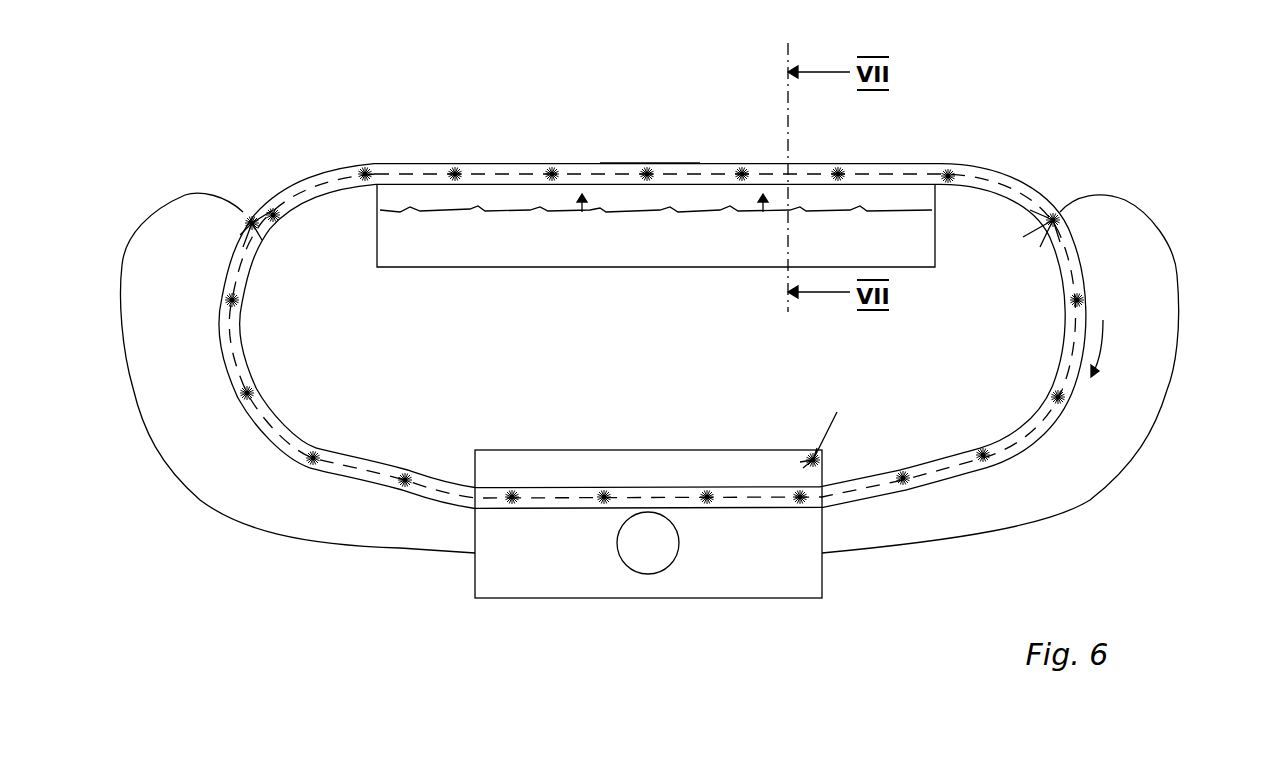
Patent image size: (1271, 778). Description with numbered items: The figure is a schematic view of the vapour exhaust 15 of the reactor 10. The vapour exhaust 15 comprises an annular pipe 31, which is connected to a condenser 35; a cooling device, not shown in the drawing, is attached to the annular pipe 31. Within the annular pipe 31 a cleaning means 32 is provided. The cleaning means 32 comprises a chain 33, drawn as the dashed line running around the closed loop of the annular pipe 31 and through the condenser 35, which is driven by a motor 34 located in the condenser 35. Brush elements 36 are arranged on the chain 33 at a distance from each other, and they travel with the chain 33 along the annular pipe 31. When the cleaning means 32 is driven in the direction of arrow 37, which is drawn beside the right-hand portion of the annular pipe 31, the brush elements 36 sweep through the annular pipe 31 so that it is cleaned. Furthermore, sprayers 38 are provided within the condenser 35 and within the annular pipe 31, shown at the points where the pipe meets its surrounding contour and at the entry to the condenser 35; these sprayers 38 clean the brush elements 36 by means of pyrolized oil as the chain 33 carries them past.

The reactor 10 is at (607, 268).
The vapour exhaust 15 is at (642, 161).
The annular pipe 31 is at (1087, 273).
The cleaning means 32 is at (502, 172).
The chain 33 is at (403, 173).
The motor 34 is at (637, 575).
The condenser 35 is at (827, 577).
The brush elements 36 is at (843, 162).
The arrow 37 is at (1114, 348).
The sprayers 38 is at (250, 220).